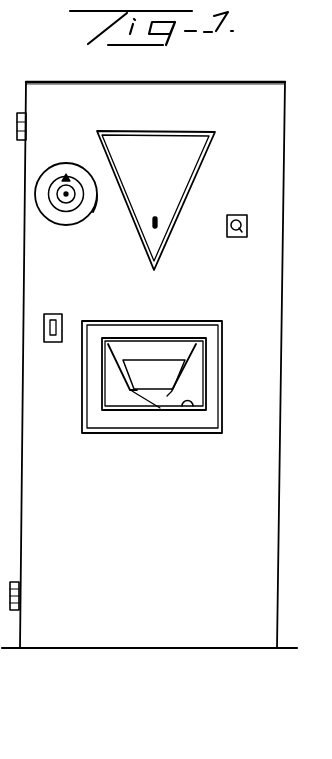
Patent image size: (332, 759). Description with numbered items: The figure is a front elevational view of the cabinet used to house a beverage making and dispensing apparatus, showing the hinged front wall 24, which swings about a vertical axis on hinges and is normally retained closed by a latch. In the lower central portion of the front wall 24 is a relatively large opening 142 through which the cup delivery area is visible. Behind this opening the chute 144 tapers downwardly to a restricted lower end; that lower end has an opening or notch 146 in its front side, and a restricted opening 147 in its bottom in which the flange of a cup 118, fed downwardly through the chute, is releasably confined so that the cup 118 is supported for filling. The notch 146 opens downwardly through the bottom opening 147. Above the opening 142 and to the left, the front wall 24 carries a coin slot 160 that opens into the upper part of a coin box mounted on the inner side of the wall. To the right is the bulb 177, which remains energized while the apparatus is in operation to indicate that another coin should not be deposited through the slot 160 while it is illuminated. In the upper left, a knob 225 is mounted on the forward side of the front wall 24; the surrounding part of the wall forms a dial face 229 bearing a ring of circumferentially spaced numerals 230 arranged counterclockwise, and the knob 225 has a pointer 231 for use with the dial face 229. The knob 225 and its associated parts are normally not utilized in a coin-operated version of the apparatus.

The front wall 24 is at (146, 630).
The pointer 231 is at (67, 178).
The numerals 230 is at (67, 219).
The dial face 229 is at (93, 212).
The knob 225 is at (78, 190).
The bulb 177 is at (242, 237).
The coin slot 160 is at (58, 325).
The chute 144 is at (195, 356).
The opening or notch 146 is at (160, 362).
The restricted opening 147 is at (172, 390).
The cup 118 is at (157, 397).
The opening 142 is at (193, 406).